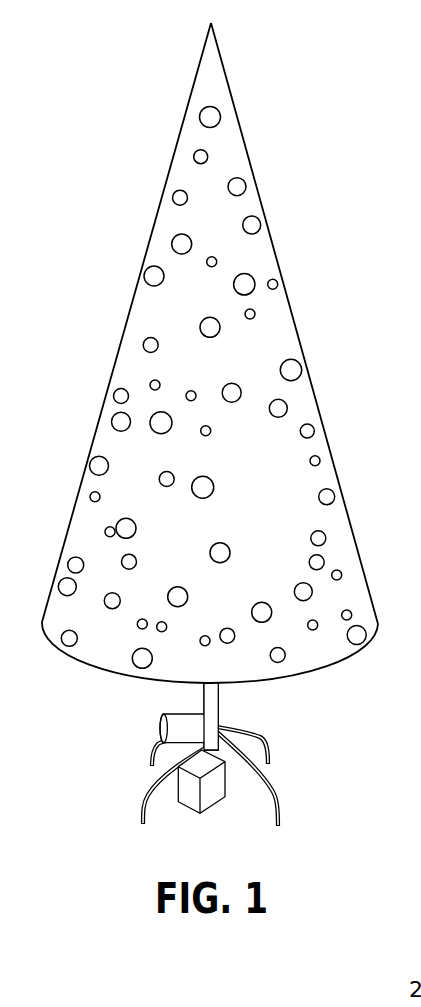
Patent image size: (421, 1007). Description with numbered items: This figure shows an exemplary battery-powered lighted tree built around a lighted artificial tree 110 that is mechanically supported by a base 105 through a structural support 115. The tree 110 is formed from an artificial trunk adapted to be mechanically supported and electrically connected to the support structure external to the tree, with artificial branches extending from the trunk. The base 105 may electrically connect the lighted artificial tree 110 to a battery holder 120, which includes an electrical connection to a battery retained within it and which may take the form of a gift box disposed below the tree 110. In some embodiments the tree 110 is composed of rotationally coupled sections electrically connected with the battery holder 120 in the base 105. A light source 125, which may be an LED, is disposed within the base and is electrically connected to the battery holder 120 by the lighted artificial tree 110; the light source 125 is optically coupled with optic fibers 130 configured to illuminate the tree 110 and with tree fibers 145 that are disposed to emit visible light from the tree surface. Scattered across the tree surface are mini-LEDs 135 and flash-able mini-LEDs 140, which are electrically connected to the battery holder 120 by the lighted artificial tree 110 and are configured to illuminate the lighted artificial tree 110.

The base 105 is at (140, 815).
The lighted artificial tree 110 is at (182, 77).
The structural support 115 is at (265, 734).
The battery holder 120 is at (212, 797).
The light source 125 is at (162, 714).
The optic fibers 130 is at (222, 57).
The mini-LEDs 135 is at (194, 153).
The flash-able mini-LEDs 140 is at (287, 405).
The tree fibers 145 is at (335, 497).